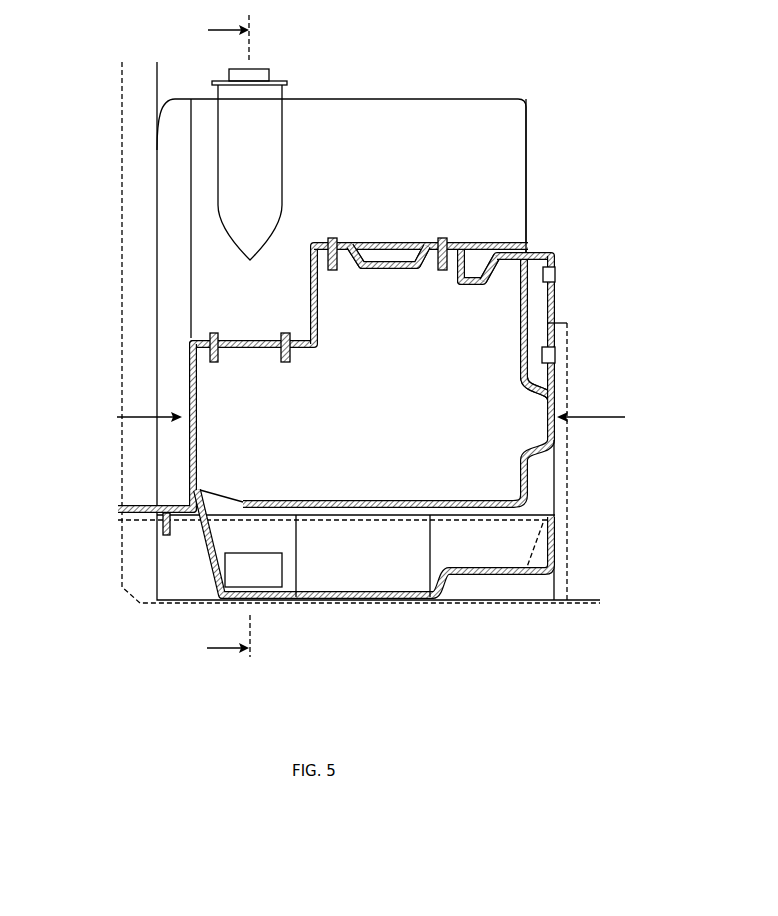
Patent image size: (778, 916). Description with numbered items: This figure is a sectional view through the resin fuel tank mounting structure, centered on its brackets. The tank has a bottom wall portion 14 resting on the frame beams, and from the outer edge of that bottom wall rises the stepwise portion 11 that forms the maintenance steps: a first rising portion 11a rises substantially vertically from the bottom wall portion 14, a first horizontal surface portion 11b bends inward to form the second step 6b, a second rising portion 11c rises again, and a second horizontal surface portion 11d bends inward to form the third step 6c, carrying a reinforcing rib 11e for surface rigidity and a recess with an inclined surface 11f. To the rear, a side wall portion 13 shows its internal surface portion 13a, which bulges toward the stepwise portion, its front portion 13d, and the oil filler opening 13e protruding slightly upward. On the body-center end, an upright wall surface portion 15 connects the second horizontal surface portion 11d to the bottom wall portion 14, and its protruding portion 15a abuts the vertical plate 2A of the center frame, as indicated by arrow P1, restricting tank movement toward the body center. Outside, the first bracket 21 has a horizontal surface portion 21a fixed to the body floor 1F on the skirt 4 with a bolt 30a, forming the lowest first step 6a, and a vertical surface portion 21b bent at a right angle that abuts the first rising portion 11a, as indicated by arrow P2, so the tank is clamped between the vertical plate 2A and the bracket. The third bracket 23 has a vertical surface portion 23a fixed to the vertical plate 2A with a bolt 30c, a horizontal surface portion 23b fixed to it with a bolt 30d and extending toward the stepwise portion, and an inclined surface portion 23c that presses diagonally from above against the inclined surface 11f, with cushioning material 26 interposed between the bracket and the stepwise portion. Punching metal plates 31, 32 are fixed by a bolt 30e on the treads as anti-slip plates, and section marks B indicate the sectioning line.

The skirt 4 is at (120, 567).
The body floor 1F is at (120, 523).
The side wall portion 13 is at (326, 179).
The internal surface portion 13a is at (441, 140).
The front portion 13d is at (168, 185).
The oil filler opening 13e is at (264, 68).
The upright wall surface portion 15 is at (527, 188).
The protruding portion 15a is at (553, 410).
The stepwise portion 11 is at (343, 349).
The first rising portion 11a is at (187, 433).
The first horizontal surface portion 11b is at (253, 310).
The second rising portion 11c is at (313, 293).
The second horizontal surface portion 11d is at (325, 201).
The reinforcing rib 11e is at (375, 241).
The inclined surface 11f is at (467, 285).
The first step 6a is at (200, 488).
The second step 6b is at (232, 338).
The third step 6c is at (343, 242).
The first bracket 21 is at (172, 511).
The horizontal surface portion 21a is at (202, 491).
The vertical surface portion 21b is at (200, 457).
The third bracket 23 is at (545, 320).
The vertical surface portion 23a is at (548, 332).
The horizontal surface portion 23b is at (537, 251).
The inclined surface portion 23c is at (487, 250).
The cushioning material 26 is at (512, 279).
The bolt 30a is at (167, 535).
The bolt 30c is at (557, 357).
The bolt 30d is at (562, 275).
The bolt 30e is at (443, 238).
The punching metal plate 31 is at (260, 337).
The punching metal plate 32 is at (404, 242).
The bottom wall portion 14 is at (298, 612).
The vertical plate 2A is at (570, 333).
The arrow P1 is at (603, 418).
The arrow P2 is at (133, 418).
The section line B is at (219, 337).